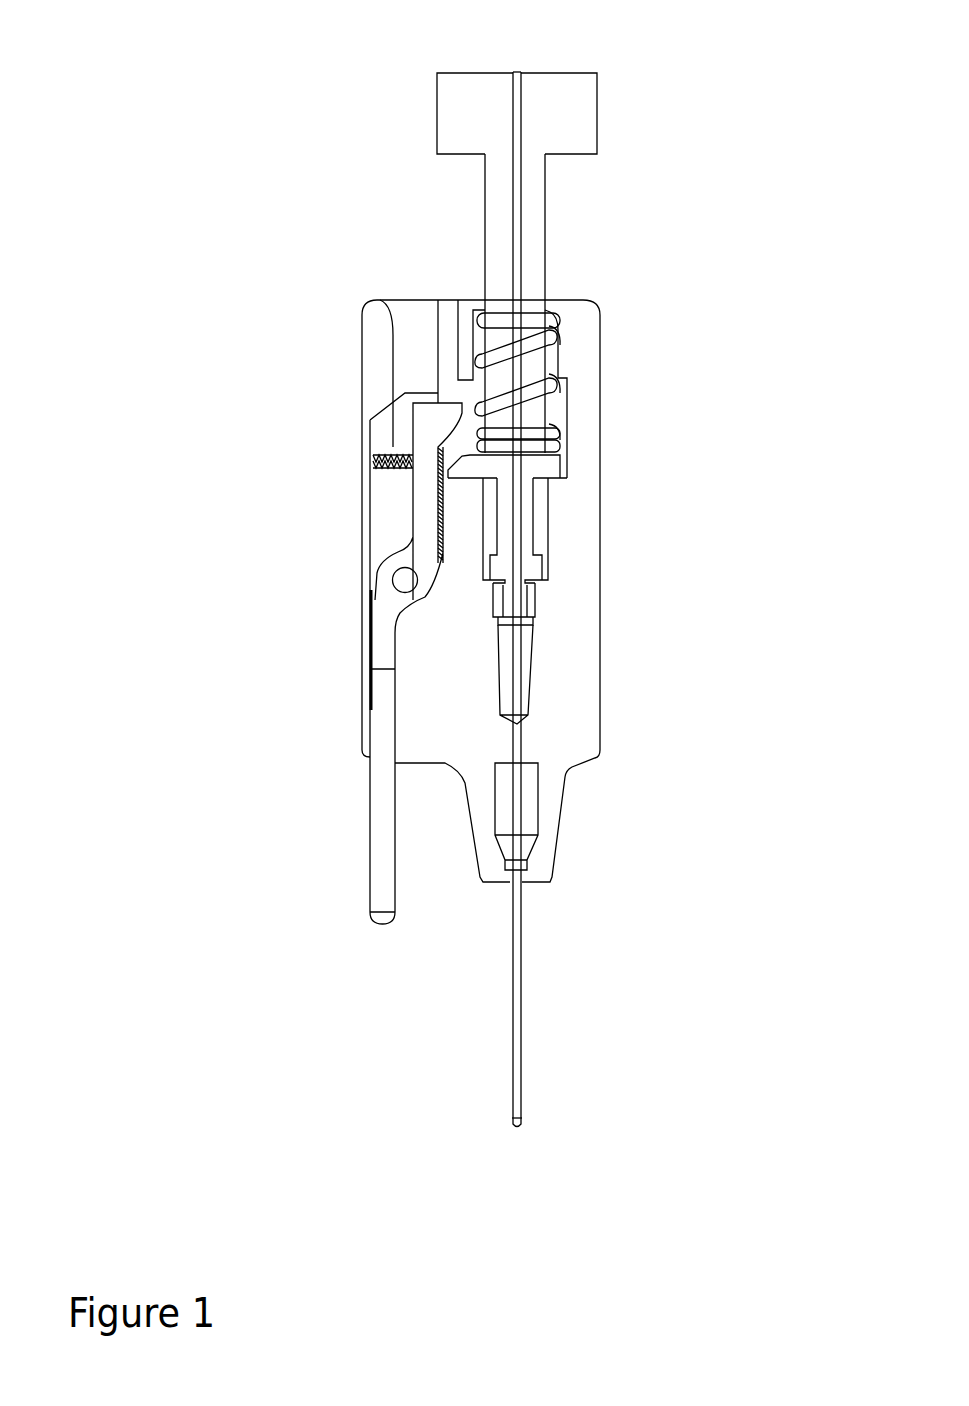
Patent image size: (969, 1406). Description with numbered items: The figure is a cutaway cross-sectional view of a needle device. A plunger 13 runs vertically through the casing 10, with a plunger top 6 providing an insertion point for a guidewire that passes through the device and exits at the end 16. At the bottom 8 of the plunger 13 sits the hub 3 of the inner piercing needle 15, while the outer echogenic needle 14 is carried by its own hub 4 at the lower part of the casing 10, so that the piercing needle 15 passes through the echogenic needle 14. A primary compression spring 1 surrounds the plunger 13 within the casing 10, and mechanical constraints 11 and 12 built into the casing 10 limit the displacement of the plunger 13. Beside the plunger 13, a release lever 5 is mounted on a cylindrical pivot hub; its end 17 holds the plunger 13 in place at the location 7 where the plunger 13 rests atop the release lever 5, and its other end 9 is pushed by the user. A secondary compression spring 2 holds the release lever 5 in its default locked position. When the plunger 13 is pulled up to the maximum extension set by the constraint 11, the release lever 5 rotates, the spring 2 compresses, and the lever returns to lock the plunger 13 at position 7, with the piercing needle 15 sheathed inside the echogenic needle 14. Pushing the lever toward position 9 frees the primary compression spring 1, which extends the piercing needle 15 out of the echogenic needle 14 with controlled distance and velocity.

The primary compression spring 1 is at (532, 300).
The secondary compression spring 2 is at (380, 297).
The hub of inner piercing needle 3 is at (538, 668).
The hub of outer echogenic needle 4 is at (545, 800).
The release lever 5 is at (380, 588).
The plunger top 6 is at (514, 70).
The location where plunger rests atop release lever 7 is at (458, 300).
The bottom of plunger 8 is at (538, 595).
The end of release lever pushed by user 9 is at (381, 925).
The casing 10 is at (409, 300).
The mechanical constraint 11 is at (553, 298).
The mechanical constraint 12 is at (565, 480).
The plunger 13 is at (580, 65).
The outer echogenic needle 14 is at (530, 970).
The inner piercing needle 15 is at (527, 1123).
The end of the device 16 is at (517, 1133).
The end of release lever that holds plunger 17 is at (438, 300).